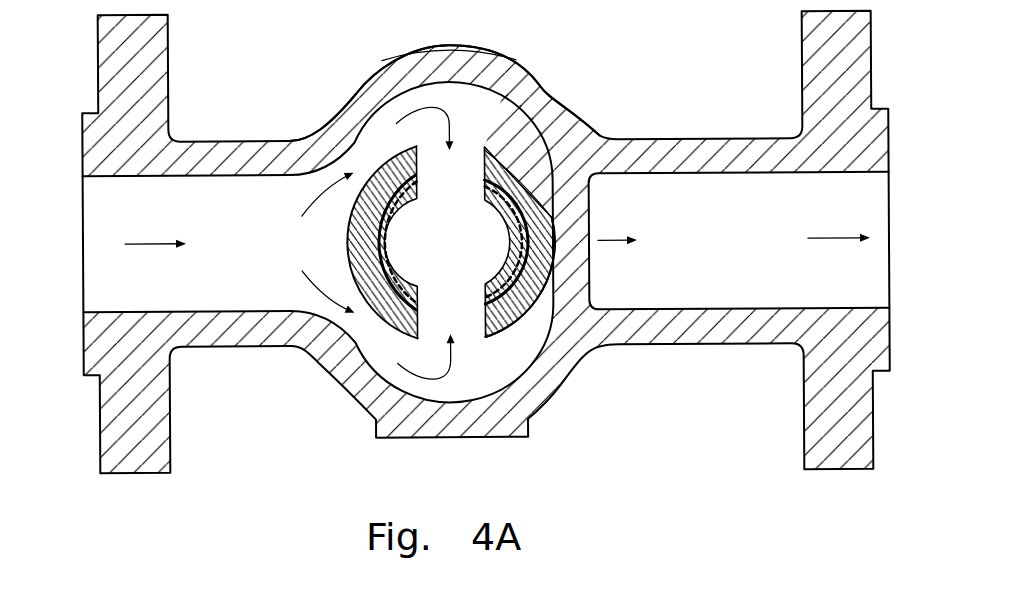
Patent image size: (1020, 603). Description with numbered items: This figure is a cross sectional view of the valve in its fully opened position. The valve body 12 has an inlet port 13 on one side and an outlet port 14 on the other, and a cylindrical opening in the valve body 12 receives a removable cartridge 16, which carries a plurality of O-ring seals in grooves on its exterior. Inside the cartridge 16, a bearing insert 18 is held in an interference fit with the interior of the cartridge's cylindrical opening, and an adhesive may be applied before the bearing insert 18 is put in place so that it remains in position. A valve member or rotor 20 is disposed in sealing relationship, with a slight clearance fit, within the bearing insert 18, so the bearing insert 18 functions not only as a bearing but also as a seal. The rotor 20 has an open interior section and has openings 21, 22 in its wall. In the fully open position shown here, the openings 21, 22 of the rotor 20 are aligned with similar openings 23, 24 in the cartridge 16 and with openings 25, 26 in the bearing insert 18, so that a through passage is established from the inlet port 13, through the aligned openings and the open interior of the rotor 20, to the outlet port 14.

The valve body 12 is at (350, 392).
The inlet port 13 is at (90, 230).
The outlet port 14 is at (852, 214).
The removable cartridge 16 is at (387, 165).
The bearing insert 18 is at (348, 232).
The rotor 20 is at (500, 248).
The opening 21 is at (487, 287).
The opening 22 is at (487, 198).
The opening 23 is at (485, 330).
The opening 24 is at (483, 153).
The opening 25 is at (503, 303).
The opening 26 is at (487, 183).